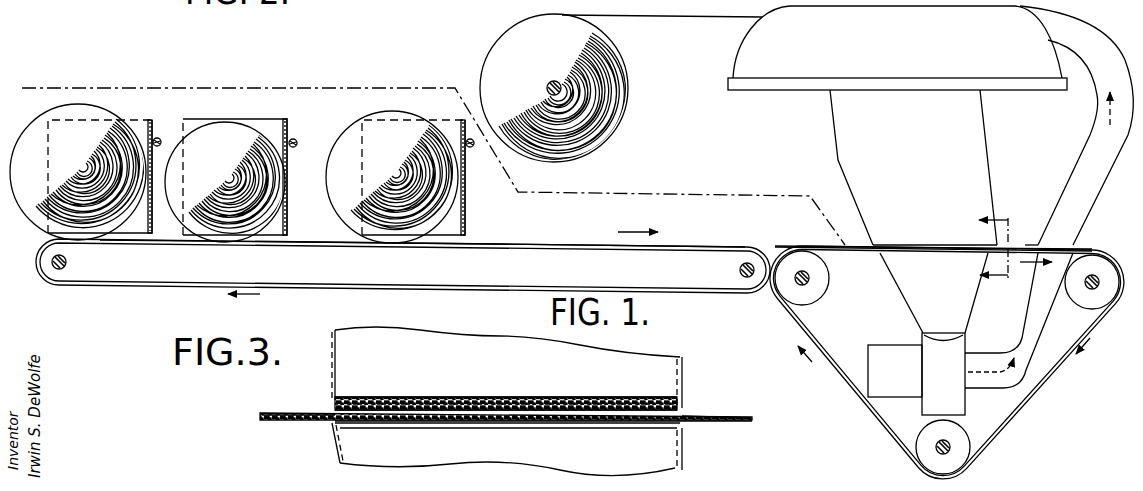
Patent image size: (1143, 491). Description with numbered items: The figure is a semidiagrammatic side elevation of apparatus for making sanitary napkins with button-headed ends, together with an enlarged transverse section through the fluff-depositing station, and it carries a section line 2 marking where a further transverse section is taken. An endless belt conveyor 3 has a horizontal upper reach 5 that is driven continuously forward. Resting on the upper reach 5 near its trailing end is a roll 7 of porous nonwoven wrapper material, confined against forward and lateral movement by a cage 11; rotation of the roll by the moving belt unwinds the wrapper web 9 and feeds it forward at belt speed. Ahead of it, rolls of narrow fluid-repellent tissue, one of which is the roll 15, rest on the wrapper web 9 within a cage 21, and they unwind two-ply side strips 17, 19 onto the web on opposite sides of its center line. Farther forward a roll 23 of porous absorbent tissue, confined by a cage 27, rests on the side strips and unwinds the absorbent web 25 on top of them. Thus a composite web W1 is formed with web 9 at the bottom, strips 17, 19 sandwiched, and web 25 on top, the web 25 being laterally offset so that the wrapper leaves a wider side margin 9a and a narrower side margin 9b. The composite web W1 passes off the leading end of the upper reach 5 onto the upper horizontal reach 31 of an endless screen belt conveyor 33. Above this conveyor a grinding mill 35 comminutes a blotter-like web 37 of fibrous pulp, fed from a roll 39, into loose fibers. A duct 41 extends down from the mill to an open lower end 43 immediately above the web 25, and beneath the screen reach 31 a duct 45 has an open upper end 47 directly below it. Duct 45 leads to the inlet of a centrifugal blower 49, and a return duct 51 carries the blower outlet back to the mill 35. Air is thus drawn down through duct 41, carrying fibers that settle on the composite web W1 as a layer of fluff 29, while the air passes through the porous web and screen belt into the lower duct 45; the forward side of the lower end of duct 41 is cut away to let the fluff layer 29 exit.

In FIG. 1, the section line 2- 2 is at (22, 88).
In FIG. 1, the endless belt conveyor 3 is at (148, 289).
In FIG. 1, the upper reach 5 is at (424, 250).
In FIG. 1, the roll of porous napkin-wrapper material 7 is at (42, 125).
In FIG. 1, the wrapper web 9 is at (160, 240).
In FIG. 3, the wrapper web 9 is at (492, 422).
In FIG. 3, the side margin of web 9 9a is at (708, 417).
In FIG. 3, the side margin of web 9 9b is at (333, 410).
In FIG. 1, the cage 11 is at (149, 120).
In FIG. 1, the roll of fluid-repellent strip material 15 is at (233, 138).
In FIG. 3, the side strip 17 is at (583, 400).
In FIG. 3, the side strip 19 is at (433, 397).
In FIG. 1, the cage 21 is at (287, 120).
In FIG. 1, the roll of absorbent material 23 is at (384, 112).
In FIG. 1, the absorbent tissue web 25 is at (517, 241).
In FIG. 3, the absorbent tissue web 25 is at (365, 397).
In FIG. 1, the cage 27 is at (455, 119).
In FIG. 1, the layer of fluff 29 is at (1027, 245).
In FIG. 3, the layer of fluff 29 is at (405, 397).
In FIG. 1, the upper horizontal reach 31 is at (853, 256).
In FIG. 3, the upper horizontal reach 31 is at (757, 421).
In FIG. 1, the endless screen belt conveyor 33 is at (791, 322).
In FIG. 1, the grinding mill 35 is at (904, 52).
In FIG. 1, the web of fibrous pulp material 37 is at (668, 18).
In FIG. 1, the roll 39 is at (605, 129).
In FIG. 1, the duct 41 is at (925, 164).
In FIG. 3, the duct 41 is at (333, 352).
In FIG. 1, the open lower end 43 is at (903, 245).
In FIG. 3, the open lower end 43 is at (527, 397).
In FIG. 1, the duct 45 is at (908, 308).
In FIG. 3, the duct 45 is at (683, 450).
In FIG. 1, the open upper end 47 is at (912, 251).
In FIG. 3, the open upper end 47 is at (420, 426).
In FIG. 1, the centrifugal blower 49 is at (950, 384).
In FIG. 1, the return duct 51 is at (1086, 146).
In FIG. 1, the composite web W1 is at (777, 244).